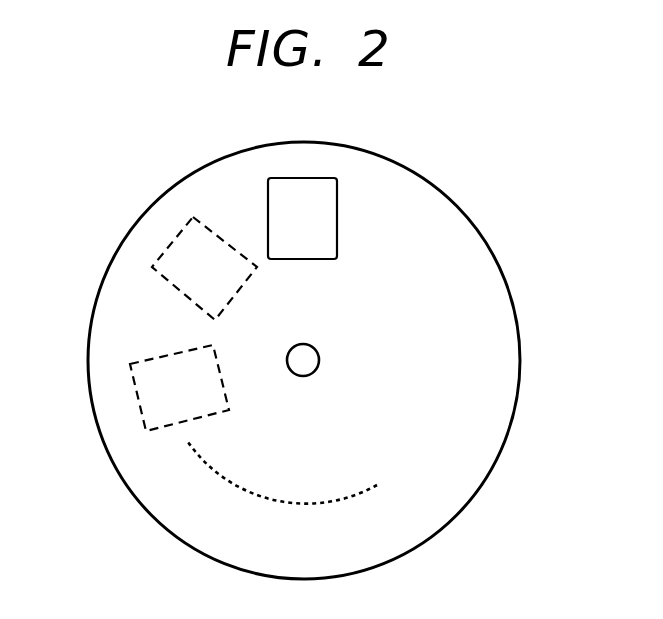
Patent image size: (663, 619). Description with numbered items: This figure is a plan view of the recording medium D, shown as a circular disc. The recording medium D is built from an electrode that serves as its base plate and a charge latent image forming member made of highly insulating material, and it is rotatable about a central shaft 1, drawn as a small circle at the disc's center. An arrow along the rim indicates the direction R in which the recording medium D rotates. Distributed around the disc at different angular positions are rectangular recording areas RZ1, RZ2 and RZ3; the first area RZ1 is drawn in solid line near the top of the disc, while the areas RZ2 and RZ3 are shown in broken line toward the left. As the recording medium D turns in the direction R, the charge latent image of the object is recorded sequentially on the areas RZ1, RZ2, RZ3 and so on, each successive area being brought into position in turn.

The recording medium D is at (495, 238).
The recording area RZ1 is at (300, 190).
The recording area RZ2 is at (182, 232).
The recording area RZ3 is at (134, 380).
The shaft 1 is at (317, 358).
The rotation direction R is at (503, 492).